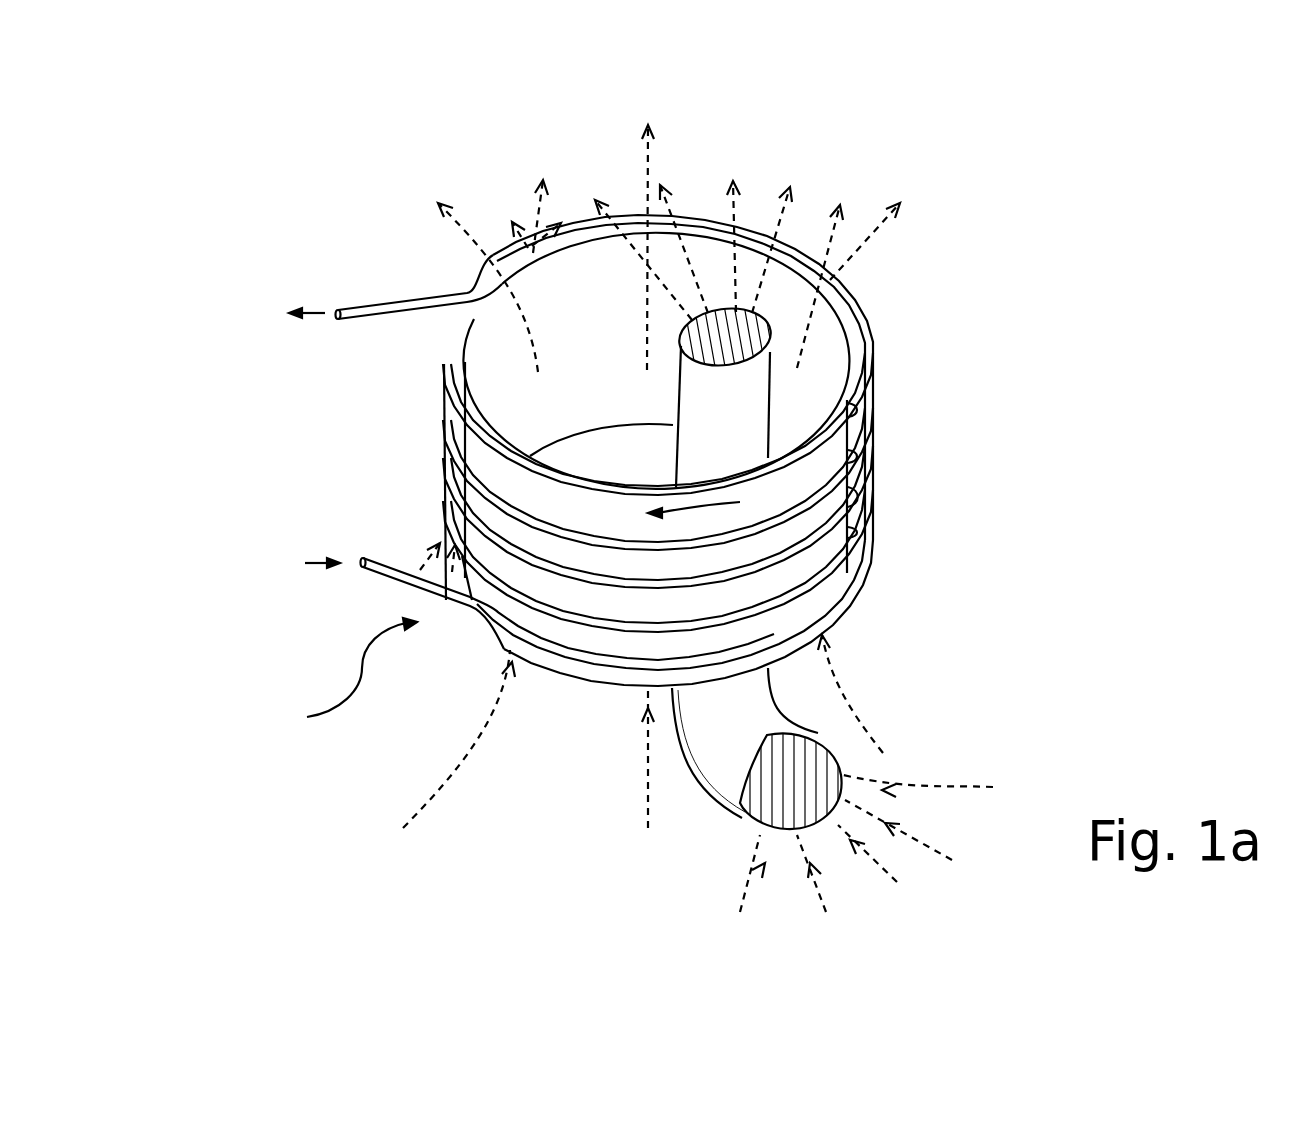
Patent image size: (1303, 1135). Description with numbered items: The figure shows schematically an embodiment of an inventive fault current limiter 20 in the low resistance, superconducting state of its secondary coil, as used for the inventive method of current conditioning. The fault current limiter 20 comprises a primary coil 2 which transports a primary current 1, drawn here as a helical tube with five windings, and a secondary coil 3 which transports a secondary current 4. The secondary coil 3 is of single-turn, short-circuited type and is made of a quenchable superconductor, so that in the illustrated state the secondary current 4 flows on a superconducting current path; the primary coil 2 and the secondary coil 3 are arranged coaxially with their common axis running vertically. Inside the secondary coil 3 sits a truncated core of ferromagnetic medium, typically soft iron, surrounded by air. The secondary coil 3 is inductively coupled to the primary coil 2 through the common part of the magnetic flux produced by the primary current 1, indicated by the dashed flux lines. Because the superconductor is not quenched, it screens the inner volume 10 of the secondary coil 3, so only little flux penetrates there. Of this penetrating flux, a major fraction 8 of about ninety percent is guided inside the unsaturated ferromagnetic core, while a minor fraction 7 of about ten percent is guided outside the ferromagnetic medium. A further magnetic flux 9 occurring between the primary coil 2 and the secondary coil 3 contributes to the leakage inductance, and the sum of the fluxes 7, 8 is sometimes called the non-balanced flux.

The primary current 1 is at (307, 305).
The primary coil 2 is at (870, 367).
The secondary coil 3 is at (830, 428).
The secondary current 4 is at (740, 502).
The minor fraction of the common magnetic flux 7 is at (465, 230).
The major fraction of the penetrating magnetic flux 8 is at (847, 188).
The magnetic flux between the primary coil and secondary coil 9 is at (577, 173).
The inner volume of the secondary coil 10 is at (607, 394).
The fault current limiter 20 is at (343, 643).